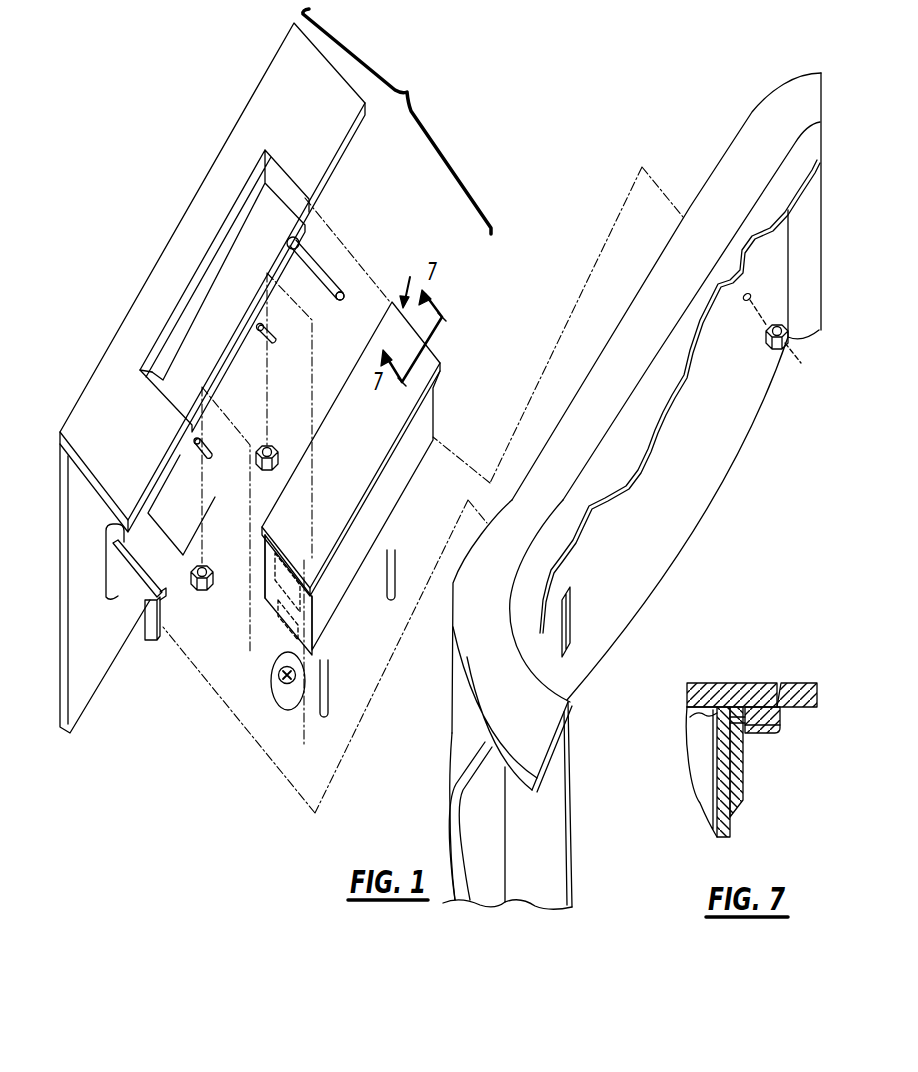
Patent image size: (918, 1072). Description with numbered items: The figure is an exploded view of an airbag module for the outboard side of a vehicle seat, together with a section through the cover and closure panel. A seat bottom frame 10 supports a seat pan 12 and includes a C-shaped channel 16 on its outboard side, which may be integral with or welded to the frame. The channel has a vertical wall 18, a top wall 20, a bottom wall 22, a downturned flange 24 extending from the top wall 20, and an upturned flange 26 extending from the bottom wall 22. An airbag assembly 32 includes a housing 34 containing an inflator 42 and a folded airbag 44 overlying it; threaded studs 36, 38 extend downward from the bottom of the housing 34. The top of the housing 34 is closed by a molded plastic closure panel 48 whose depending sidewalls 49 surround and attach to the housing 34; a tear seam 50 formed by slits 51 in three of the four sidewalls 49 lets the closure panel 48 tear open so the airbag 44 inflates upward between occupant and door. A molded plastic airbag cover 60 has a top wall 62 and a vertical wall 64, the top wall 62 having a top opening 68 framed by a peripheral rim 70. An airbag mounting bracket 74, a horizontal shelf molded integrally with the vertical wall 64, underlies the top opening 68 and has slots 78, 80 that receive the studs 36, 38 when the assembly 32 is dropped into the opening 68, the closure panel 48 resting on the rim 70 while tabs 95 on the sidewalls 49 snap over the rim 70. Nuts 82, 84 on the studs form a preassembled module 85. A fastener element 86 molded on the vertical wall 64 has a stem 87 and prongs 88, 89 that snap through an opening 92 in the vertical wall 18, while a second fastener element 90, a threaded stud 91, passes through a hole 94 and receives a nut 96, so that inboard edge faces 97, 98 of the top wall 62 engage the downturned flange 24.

In FIG. 1, the seat bottom frame 10 is at (753, 142).
In FIG. 1, the seat pan 12 is at (815, 140).
In FIG. 1, the C-shaped channel 16 is at (725, 178).
In FIG. 1, the vertical wall 18 is at (577, 690).
In FIG. 1, the top wall 20 is at (474, 622).
In FIG. 1, the bottom wall 22 is at (478, 833).
In FIG. 1, the downturned flange 24 is at (540, 755).
In FIG. 1, the upturned flange 26 is at (450, 818).
In FIG. 1, the airbag assembly 32 is at (411, 276).
In FIG. 1, the housing 34 is at (270, 640).
In FIG. 7, the housing 34 is at (718, 768).
In FIG. 1, the threaded stud 36 is at (329, 708).
In FIG. 1, the threaded stud 38 is at (384, 598).
In FIG. 1, the inflator 42 is at (287, 692).
In FIG. 1, the folded airbag 44 is at (301, 686).
In FIG. 1, the closure panel 48 is at (427, 373).
In FIG. 7, the closure panel 48 is at (707, 684).
In FIG. 1, the sidewalls 49 is at (425, 422).
In FIG. 7, the sidewalls 49 is at (733, 803).
In FIG. 1, the tear seam 50 is at (287, 563).
In FIG. 1, the slits 51 is at (270, 553).
In FIG. 1, the airbag cover 60 is at (267, 118).
In FIG. 7, the airbag cover 60 is at (805, 683).
In FIG. 1, the top wall 62 is at (222, 186).
In FIG. 7, the top wall 62 is at (817, 708).
In FIG. 1, the vertical wall 64 is at (66, 590).
In FIG. 1, the top opening 68 is at (197, 288).
In FIG. 7, the top opening 68 is at (776, 706).
In FIG. 1, the peripheral rim 70 is at (167, 343).
In FIG. 7, the peripheral rim 70 is at (758, 735).
In FIG. 1, the airbag mounting bracket 74 is at (178, 522).
In FIG. 1, the slot 78 is at (212, 440).
In FIG. 1, the slot 80 is at (263, 345).
In FIG. 1, the nut 82 is at (203, 592).
In FIG. 1, the nut 84 is at (272, 446).
In FIG. 1, the preassembled module 85 is at (397, 121).
In FIG. 1, the fastener element 86 is at (128, 590).
In FIG. 1, the stem 87 is at (137, 597).
In FIG. 1, the prong 88 is at (152, 642).
In FIG. 1, the prong 89 is at (163, 584).
In FIG. 1, the fastener element 90 is at (311, 262).
In FIG. 1, the threaded stud 91 is at (335, 290).
In FIG. 1, the opening 92 is at (572, 612).
In FIG. 1, the hole 94 is at (748, 294).
In FIG. 7, the tabs 95 is at (747, 737).
In FIG. 1, the nut 96 is at (768, 349).
In FIG. 1, the inboard edge face 97 is at (157, 478).
In FIG. 1, the inboard edge face 98 is at (347, 148).